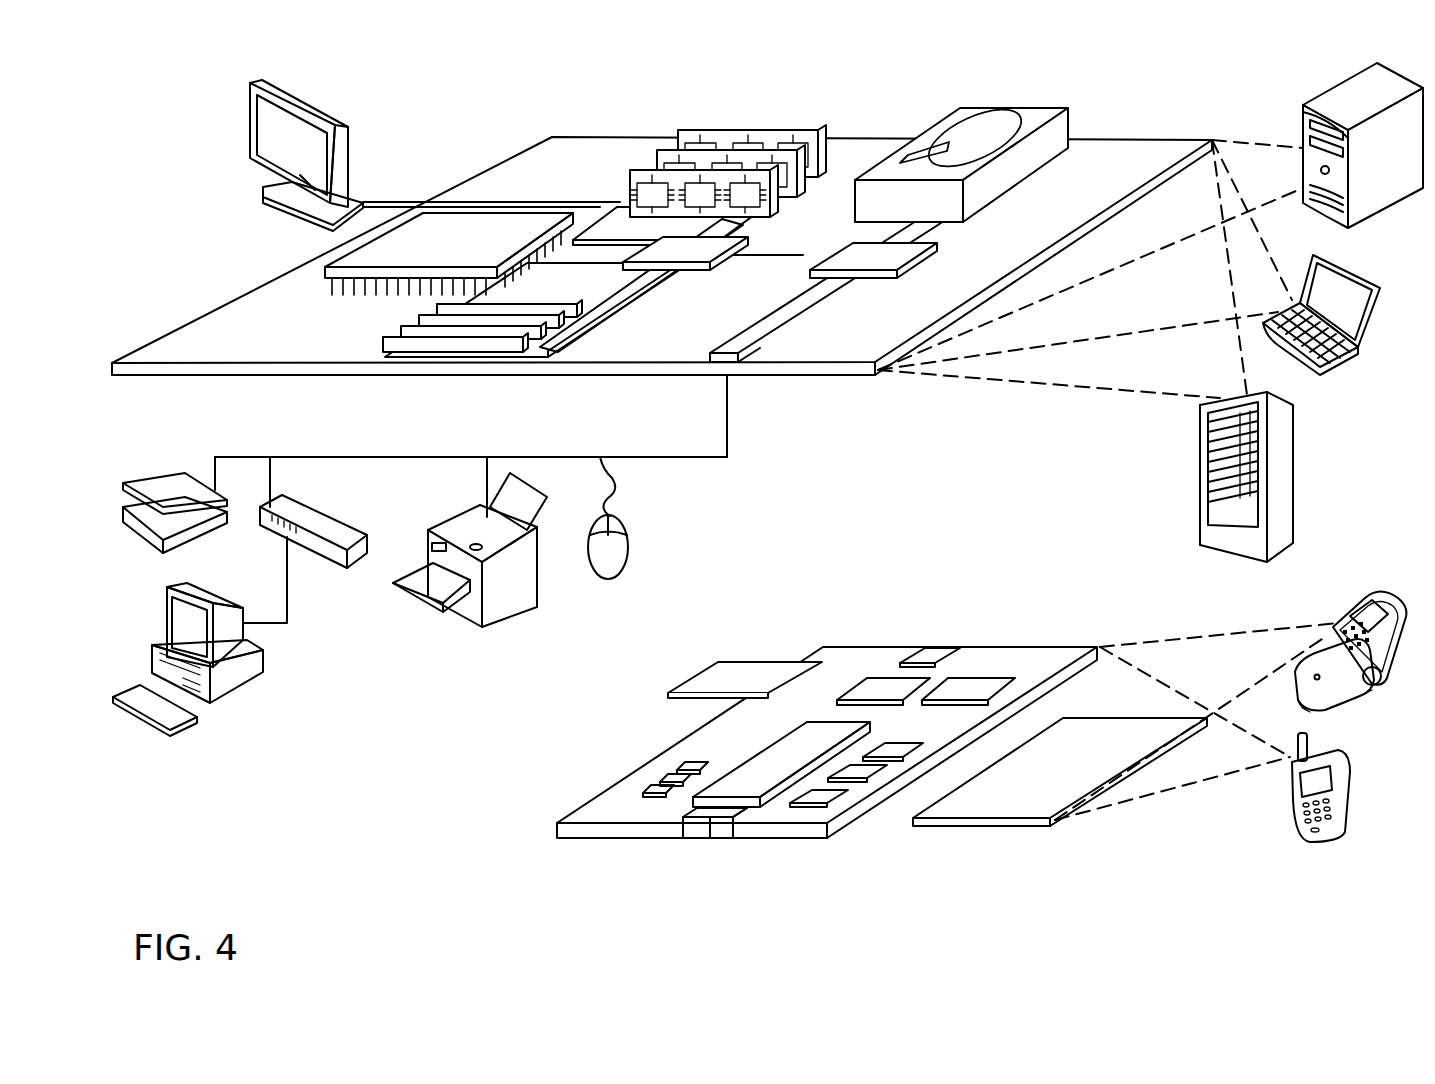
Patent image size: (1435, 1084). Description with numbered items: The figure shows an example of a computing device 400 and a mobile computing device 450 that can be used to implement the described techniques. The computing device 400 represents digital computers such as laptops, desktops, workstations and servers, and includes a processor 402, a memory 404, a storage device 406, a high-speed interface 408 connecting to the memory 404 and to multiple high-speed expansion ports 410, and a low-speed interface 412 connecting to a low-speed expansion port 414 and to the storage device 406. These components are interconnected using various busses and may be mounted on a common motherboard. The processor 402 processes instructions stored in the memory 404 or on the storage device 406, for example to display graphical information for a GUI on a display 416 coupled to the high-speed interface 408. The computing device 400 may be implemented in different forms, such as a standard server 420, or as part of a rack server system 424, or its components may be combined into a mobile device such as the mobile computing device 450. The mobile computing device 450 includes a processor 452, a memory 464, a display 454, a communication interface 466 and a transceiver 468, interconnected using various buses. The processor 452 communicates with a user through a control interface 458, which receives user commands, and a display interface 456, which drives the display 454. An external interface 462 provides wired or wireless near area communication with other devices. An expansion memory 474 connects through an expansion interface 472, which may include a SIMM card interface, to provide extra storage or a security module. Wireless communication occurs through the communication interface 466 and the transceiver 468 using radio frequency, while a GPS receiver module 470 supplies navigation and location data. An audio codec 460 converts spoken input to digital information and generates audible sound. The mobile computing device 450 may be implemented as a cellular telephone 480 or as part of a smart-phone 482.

The computing device 400 is at (464, 102).
The processor 402 is at (326, 268).
The memory 404 is at (699, 131).
The storage device 406 is at (945, 116).
The high-speed interface 408 is at (658, 248).
The high-speed expansion ports 410 is at (410, 331).
The low-speed interface 412 is at (843, 257).
The low-speed expansion port 414 is at (742, 373).
The display 416 is at (247, 77).
The standard server 420 is at (1303, 122).
The rack server system 424 is at (1202, 502).
The mobile computing device 450 is at (522, 842).
The processor 452 is at (752, 788).
The display 454 is at (1013, 808).
The display interface 456 is at (824, 795).
The control interface 458 is at (863, 772).
The audio codec 460 is at (893, 752).
The external interface 462 is at (713, 823).
The memory 464 is at (658, 775).
The communication interface 466 is at (883, 687).
The transceiver 468 is at (970, 688).
The GPS receiver module 470 is at (937, 648).
The expansion interface 472 is at (803, 657).
The expansion memory 474 is at (803, 658).
The cellular telephone 480 is at (1357, 598).
The smart-phone 482 is at (1292, 796).